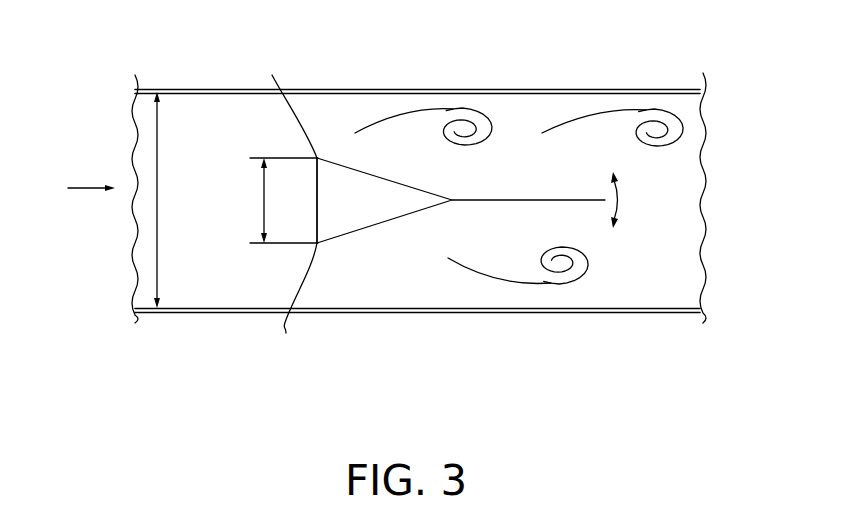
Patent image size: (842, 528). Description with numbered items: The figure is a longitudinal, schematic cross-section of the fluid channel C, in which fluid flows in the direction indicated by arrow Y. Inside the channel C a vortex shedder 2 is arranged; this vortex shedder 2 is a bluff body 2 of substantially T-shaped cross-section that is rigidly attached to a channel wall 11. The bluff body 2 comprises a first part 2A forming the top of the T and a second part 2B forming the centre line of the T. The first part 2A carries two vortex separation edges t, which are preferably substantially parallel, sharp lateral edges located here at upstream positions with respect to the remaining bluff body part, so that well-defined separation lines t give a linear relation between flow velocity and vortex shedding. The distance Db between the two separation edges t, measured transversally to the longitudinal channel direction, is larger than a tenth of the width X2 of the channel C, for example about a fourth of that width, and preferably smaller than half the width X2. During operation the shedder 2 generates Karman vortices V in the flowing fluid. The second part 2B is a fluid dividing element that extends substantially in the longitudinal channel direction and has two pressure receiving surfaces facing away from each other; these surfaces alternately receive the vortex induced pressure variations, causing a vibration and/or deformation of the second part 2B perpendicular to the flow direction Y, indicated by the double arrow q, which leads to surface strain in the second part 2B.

The vortex shedder 2 is at (456, 174).
The first part 2A is at (355, 232).
The second part 2B is at (528, 180).
The channel wall 11 is at (372, 89).
The Karman vortices V is at (475, 109).
The vortex separation edges t is at (292, 206).
The double arrow q is at (625, 200).
The distance between the two vortex separation edges Db is at (263, 176).
The width of the fluid channel X2 is at (157, 128).
The arrow indicating fluid flow direction Y is at (91, 177).
The channel C is at (206, 293).